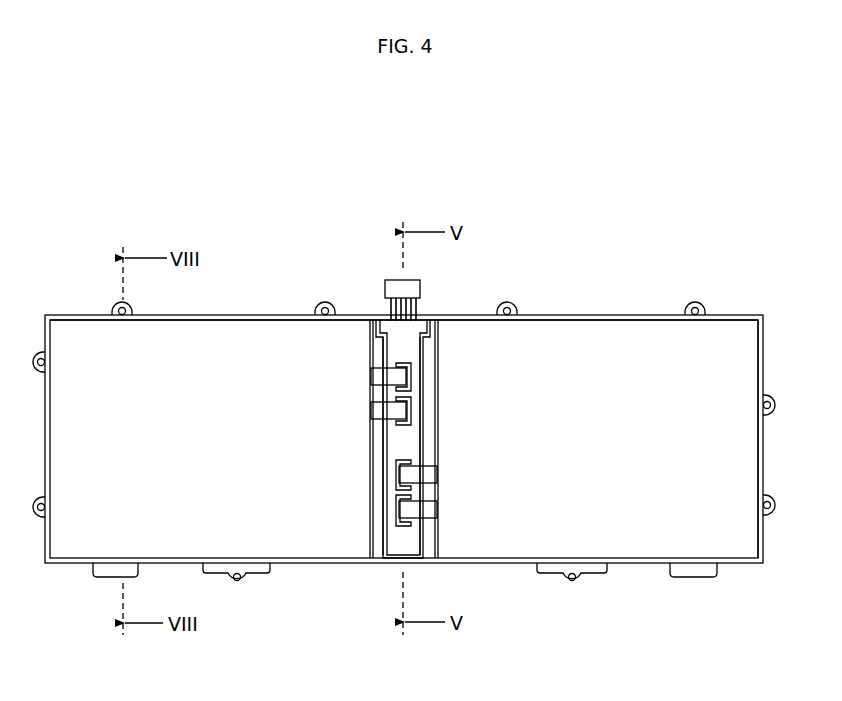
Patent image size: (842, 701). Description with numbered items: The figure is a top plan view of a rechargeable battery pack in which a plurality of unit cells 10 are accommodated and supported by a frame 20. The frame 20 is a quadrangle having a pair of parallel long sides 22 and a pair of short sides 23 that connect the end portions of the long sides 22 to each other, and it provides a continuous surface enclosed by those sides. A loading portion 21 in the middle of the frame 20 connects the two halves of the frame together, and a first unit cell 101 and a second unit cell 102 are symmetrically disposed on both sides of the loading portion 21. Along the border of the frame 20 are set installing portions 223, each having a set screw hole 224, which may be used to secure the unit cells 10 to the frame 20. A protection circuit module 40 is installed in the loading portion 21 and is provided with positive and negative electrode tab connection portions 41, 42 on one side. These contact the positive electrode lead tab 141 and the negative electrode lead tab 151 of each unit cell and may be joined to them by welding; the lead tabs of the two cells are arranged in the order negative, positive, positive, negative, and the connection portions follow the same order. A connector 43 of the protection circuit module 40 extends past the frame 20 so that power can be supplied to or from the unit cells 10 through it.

The unit cells 10 is at (462, 506).
The frame 20 is at (645, 240).
The loading portion 21 is at (423, 398).
The long sides 22 is at (657, 315).
The short sides 23 is at (765, 350).
The protection circuit module 40 is at (413, 270).
The positive electrode tab connection portion 41 is at (412, 412).
The negative electrode tab connection portion 42 is at (413, 375).
The connector 43 is at (422, 288).
The first unit cell 101 is at (199, 448).
The second unit cell 102 is at (581, 448).
The positive electrode lead tab 141 is at (375, 410).
The negative electrode lead tab 151 is at (375, 378).
The set installing portion 223 is at (133, 306).
The set screw hole 224 is at (117, 308).